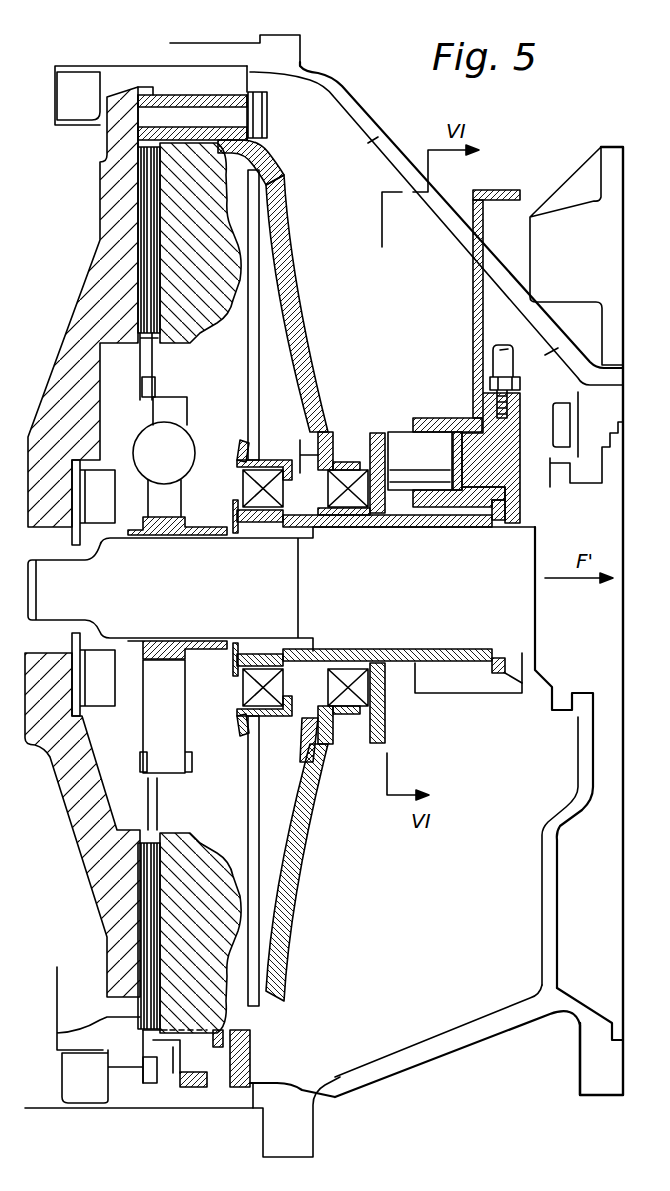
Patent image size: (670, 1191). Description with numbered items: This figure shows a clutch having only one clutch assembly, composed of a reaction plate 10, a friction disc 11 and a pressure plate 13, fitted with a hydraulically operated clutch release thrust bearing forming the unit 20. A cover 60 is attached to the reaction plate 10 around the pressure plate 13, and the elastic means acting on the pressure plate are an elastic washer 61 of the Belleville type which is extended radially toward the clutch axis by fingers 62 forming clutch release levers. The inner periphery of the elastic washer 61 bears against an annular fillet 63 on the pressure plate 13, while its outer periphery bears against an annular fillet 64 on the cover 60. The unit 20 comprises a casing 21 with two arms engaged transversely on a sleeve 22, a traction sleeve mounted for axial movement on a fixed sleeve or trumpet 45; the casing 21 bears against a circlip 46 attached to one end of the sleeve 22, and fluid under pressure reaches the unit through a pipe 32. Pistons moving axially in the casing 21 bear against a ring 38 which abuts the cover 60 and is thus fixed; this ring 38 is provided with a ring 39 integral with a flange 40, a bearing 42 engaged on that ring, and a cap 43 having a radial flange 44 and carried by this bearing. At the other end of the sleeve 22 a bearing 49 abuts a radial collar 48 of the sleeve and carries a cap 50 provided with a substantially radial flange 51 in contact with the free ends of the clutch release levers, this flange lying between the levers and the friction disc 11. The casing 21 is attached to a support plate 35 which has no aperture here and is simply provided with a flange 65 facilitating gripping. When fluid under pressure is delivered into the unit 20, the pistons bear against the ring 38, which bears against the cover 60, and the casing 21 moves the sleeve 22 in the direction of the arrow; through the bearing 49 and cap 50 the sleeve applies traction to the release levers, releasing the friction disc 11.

The reaction plate 10 is at (112, 254).
The friction disc 11 is at (147, 187).
The pressure plate 13 is at (180, 165).
The unit 20 is at (441, 354).
The casing 21 is at (430, 414).
The sleeve 22 is at (422, 522).
The pipe 32 is at (513, 360).
The support plate 35 is at (498, 184).
The ring 38 is at (331, 426).
The ring 39 is at (356, 520).
The flange 40 is at (385, 516).
The bearing 42 is at (331, 522).
The cap 43 is at (356, 449).
The radial flange 44 is at (337, 458).
The fixed sleeve 45 is at (497, 599).
The circlip 46 is at (505, 508).
The radial collar 48 is at (236, 512).
The bearing 49 is at (263, 502).
The cap 50 is at (272, 455).
The radial flange 51 is at (242, 452).
The cover 60 is at (292, 177).
The elastic washer 61 is at (262, 226).
The fingers 62 is at (263, 353).
The annular fillet 63 is at (250, 296).
The annular fillet 64 is at (276, 170).
The flange 65 is at (518, 192).